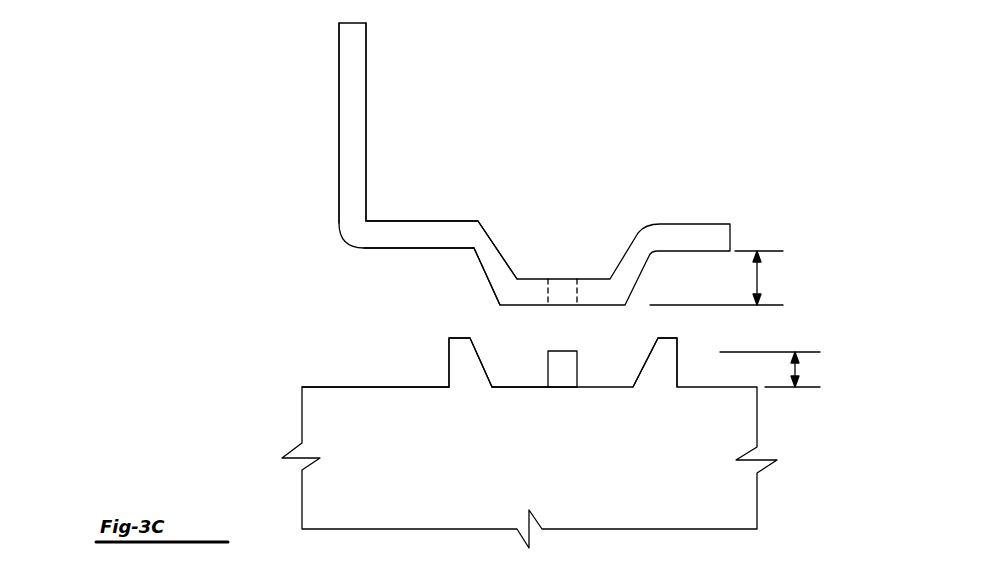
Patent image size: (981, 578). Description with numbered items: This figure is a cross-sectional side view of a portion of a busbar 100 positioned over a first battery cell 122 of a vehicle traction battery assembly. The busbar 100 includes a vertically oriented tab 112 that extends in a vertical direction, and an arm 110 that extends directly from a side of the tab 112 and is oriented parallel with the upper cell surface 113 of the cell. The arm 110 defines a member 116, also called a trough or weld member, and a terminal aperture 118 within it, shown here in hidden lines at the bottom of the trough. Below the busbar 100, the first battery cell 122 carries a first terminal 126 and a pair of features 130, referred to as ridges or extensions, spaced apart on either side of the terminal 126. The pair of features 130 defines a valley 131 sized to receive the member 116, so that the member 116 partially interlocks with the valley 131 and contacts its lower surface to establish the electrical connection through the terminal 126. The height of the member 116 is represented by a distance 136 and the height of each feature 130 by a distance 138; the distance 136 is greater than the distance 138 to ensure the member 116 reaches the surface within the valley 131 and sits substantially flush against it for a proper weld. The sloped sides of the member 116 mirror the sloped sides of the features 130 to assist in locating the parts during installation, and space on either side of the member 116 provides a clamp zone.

The busbar 100 is at (404, 39).
The arm 110 is at (418, 220).
The vertically oriented tab 112 is at (340, 113).
The upper cell surface 113 is at (350, 387).
The member 116 is at (481, 283).
The terminal aperture 118 is at (549, 292).
The first battery cell 122 is at (738, 425).
The first terminal 126 is at (552, 365).
The feature 130 is at (457, 365).
The valley 131 is at (520, 398).
The distance 136 is at (725, 278).
The distance 138 is at (778, 369).